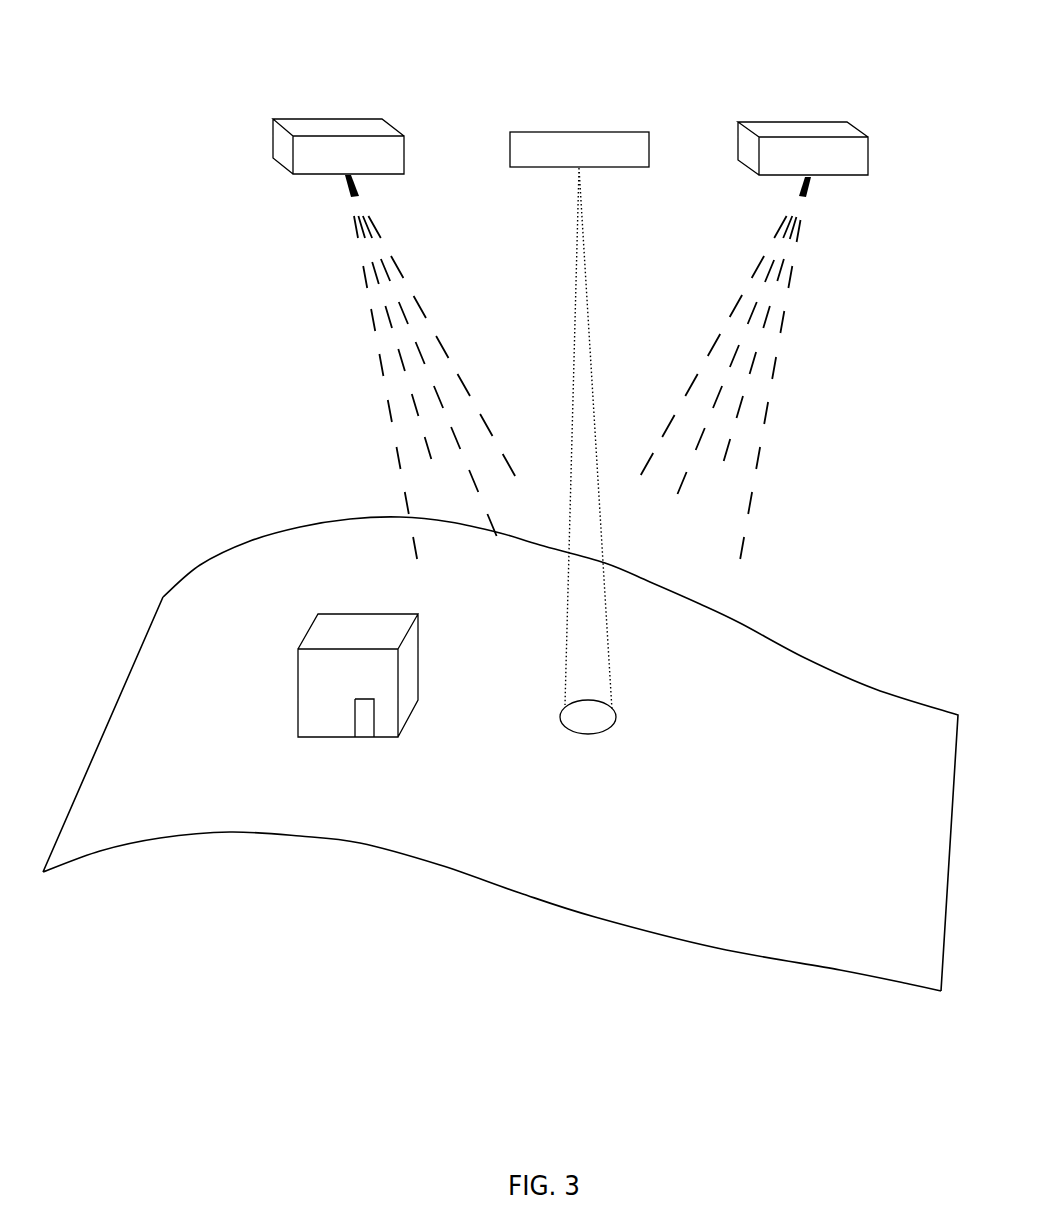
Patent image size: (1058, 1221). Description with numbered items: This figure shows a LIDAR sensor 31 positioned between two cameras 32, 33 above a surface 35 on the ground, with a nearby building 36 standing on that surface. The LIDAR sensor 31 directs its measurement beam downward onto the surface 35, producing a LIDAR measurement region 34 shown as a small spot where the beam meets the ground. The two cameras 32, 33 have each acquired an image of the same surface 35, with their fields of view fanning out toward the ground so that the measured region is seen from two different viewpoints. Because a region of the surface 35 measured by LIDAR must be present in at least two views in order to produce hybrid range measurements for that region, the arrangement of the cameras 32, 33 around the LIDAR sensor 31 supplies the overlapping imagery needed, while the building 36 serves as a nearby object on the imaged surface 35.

The distance sensor 31 is at (575, 151).
The camera 32 is at (370, 156).
The camera 33 is at (831, 157).
The measurement spot 34 is at (588, 717).
The surface 35 is at (471, 808).
The object on surface 36 is at (317, 712).